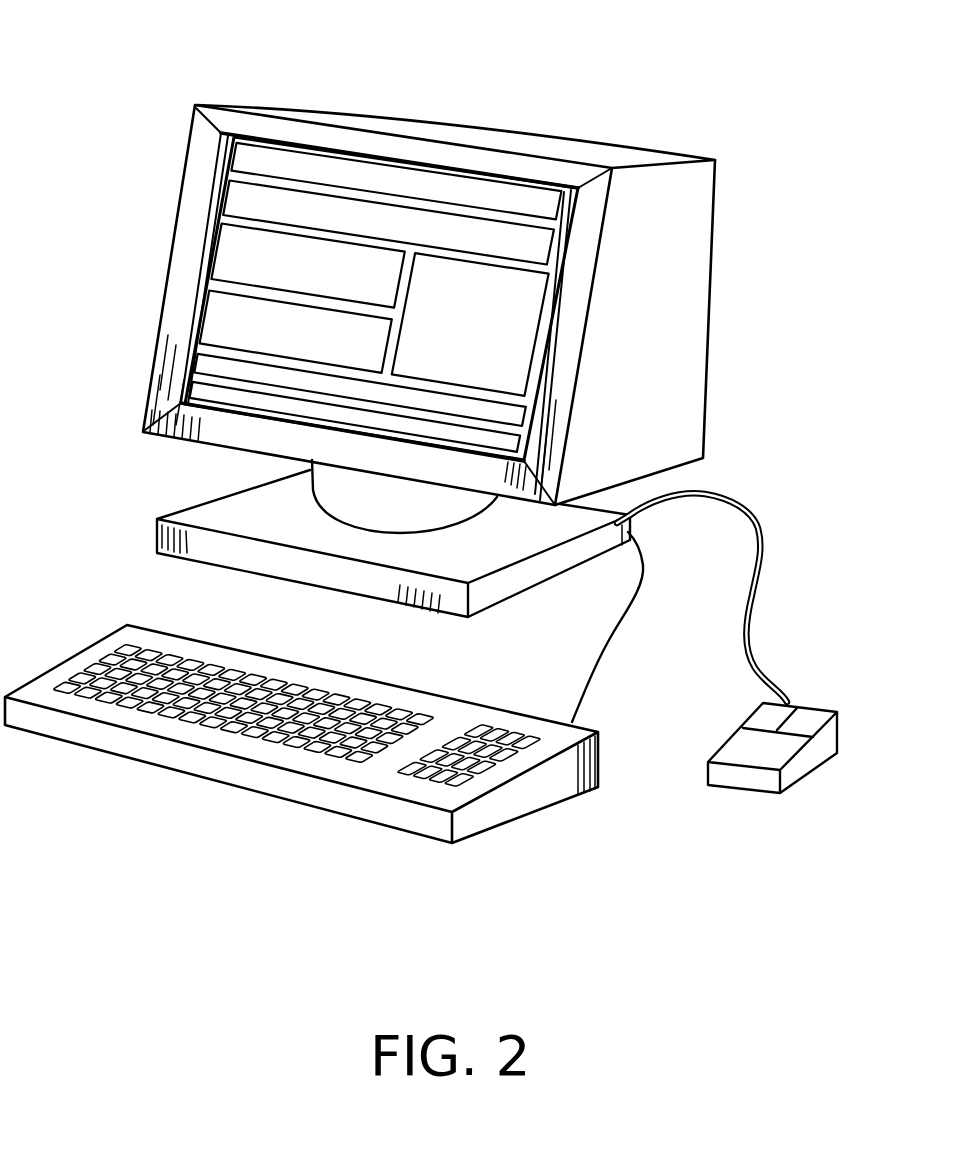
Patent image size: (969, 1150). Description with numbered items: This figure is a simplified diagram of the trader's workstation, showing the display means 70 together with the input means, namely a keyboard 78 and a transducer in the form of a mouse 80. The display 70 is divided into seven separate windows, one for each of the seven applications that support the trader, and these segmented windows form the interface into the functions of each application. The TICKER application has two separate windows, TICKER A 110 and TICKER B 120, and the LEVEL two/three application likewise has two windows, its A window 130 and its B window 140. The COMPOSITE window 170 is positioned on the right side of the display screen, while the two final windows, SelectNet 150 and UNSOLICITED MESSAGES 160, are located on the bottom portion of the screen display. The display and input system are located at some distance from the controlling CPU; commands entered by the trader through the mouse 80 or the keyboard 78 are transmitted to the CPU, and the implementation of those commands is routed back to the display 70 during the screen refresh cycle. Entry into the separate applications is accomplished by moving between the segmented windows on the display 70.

The display means 70 is at (683, 157).
The TICKER A window 110 is at (277, 152).
The TICKER B window 120 is at (245, 200).
The LEVEL 2/3-A window 130 is at (242, 257).
The LEVEL 2/3-B window 140 is at (238, 325).
The SelectNet window 150 is at (220, 372).
The UNSOLICITED MESSAGES window 160 is at (213, 398).
The COMPOSITE window 170 is at (498, 368).
The keyboard 78 is at (478, 835).
The transducer (mouse) 80 is at (765, 797).